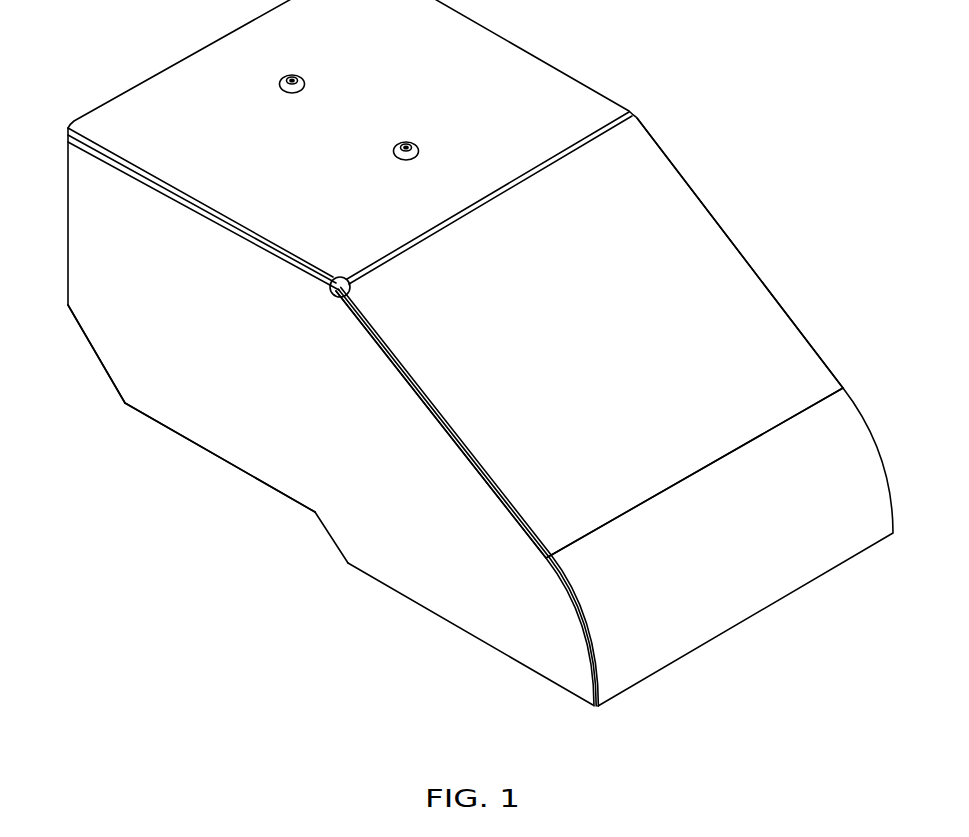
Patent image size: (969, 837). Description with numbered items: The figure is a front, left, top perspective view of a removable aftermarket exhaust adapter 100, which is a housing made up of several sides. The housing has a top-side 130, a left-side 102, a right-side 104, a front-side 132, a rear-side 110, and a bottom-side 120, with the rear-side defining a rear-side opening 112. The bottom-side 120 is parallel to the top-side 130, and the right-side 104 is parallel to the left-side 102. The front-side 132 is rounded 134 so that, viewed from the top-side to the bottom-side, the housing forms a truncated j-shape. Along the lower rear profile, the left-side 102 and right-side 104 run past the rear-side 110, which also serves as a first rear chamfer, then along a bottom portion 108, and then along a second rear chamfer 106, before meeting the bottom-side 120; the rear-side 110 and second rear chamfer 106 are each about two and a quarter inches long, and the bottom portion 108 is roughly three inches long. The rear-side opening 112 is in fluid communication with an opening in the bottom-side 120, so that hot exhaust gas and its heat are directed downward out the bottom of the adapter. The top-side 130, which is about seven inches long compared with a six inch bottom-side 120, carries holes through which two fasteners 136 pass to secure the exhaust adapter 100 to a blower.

The aftermarket exhaust adapter 100 is at (122, 630).
The left-side 102 is at (292, 478).
The right-side 104 is at (725, 226).
The second rear chamfer 106 is at (332, 545).
The bottom portion 108 is at (178, 437).
The rear-side 110 is at (100, 366).
The rear-side opening 112 is at (66, 232).
The bottom-side 120 is at (428, 617).
The top-side 130 is at (207, 62).
The front-side 132 is at (747, 313).
The rounded front-side portion 134 is at (850, 467).
The fasteners 136 is at (304, 80).